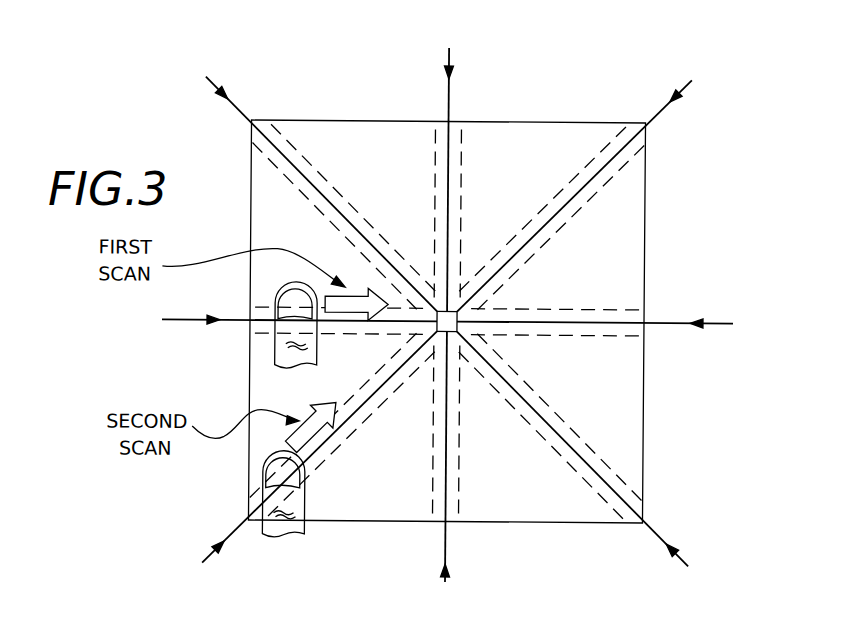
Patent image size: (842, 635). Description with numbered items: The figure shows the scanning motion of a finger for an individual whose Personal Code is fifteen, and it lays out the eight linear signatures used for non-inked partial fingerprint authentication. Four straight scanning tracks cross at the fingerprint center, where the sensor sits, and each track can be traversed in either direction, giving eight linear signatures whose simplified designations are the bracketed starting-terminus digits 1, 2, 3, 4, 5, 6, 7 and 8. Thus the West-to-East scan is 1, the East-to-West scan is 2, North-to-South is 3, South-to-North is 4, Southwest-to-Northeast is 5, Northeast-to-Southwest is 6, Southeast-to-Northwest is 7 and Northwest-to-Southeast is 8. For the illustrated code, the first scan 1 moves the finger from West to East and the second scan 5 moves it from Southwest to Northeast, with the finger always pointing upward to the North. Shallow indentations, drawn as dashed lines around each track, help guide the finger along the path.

The linear signature starting terminus {1} 1 is at (280, 336).
The linear signature starting terminus {2} 2 is at (615, 342).
The linear signature starting terminus {3} 3 is at (469, 165).
The linear signature starting terminus {4} 4 is at (465, 474).
The linear signature starting terminus {5} 5 is at (300, 460).
The linear signature starting terminus {6} 6 is at (589, 185).
The linear signature starting terminus {7} 7 is at (591, 470).
The linear signature starting terminus {8} 8 is at (308, 181).